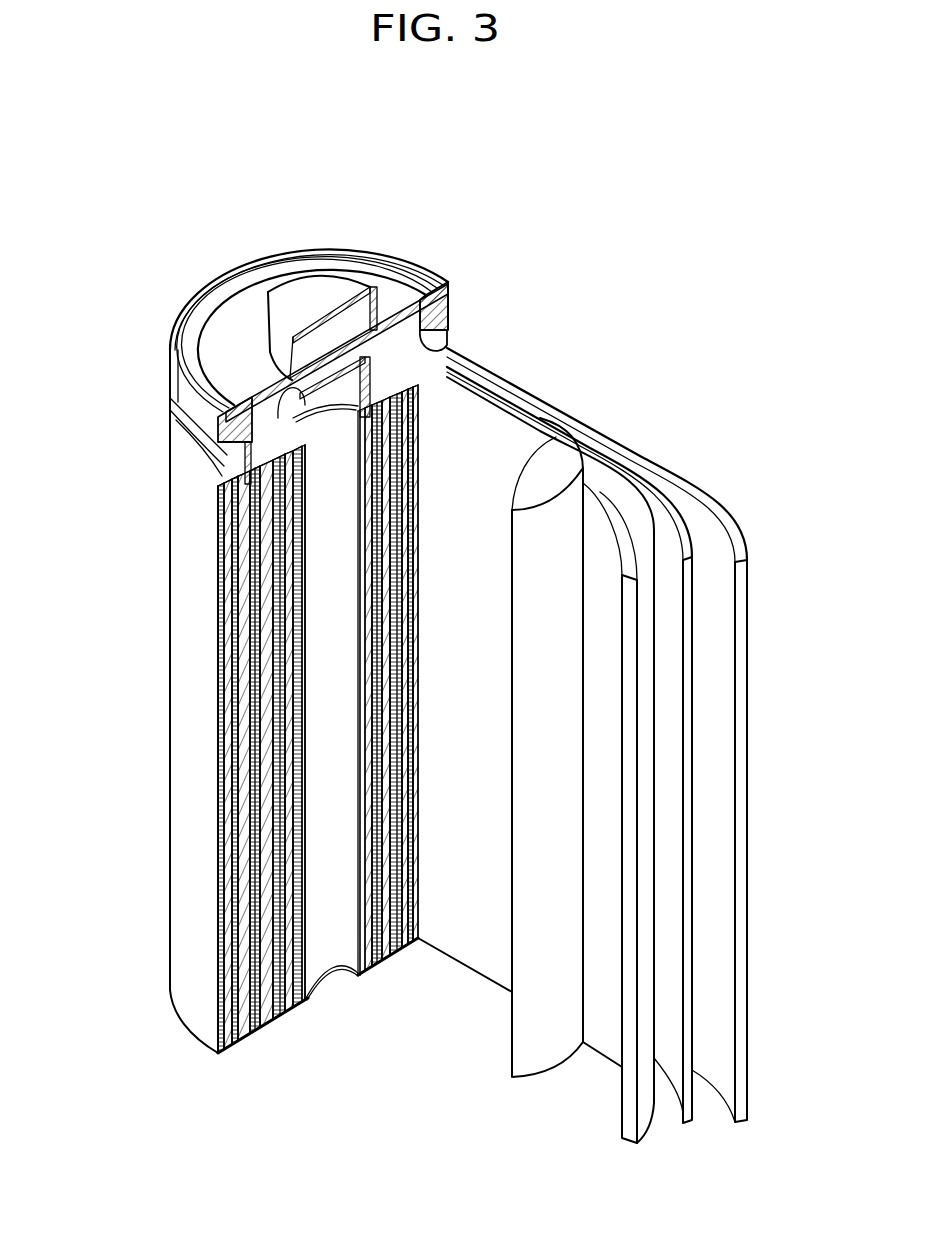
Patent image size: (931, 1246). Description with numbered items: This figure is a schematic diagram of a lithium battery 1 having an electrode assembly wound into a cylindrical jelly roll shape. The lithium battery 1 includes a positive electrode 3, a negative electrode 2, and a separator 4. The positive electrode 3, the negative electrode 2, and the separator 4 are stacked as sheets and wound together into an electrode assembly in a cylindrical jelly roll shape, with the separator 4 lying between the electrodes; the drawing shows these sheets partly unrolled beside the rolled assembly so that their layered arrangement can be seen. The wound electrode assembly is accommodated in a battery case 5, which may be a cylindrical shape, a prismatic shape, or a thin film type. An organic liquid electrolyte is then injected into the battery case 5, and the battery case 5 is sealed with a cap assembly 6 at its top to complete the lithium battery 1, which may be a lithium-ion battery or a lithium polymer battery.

The lithium battery 1 is at (543, 286).
The negative electrode 2 is at (732, 538).
The positive electrode 3 is at (607, 485).
The separator 4 is at (556, 458).
The battery case 5 is at (183, 700).
The cap assembly 6 is at (305, 298).